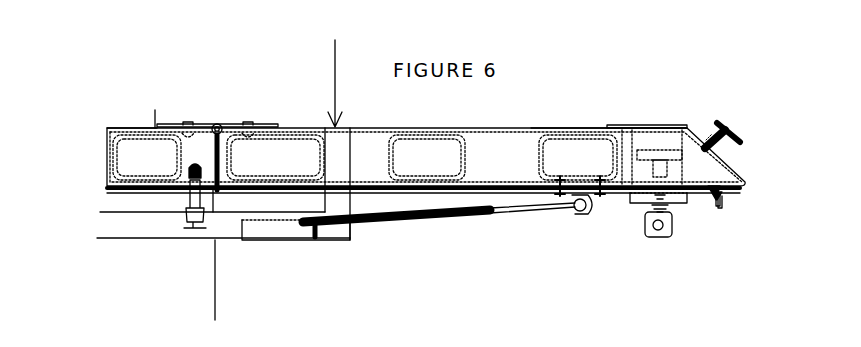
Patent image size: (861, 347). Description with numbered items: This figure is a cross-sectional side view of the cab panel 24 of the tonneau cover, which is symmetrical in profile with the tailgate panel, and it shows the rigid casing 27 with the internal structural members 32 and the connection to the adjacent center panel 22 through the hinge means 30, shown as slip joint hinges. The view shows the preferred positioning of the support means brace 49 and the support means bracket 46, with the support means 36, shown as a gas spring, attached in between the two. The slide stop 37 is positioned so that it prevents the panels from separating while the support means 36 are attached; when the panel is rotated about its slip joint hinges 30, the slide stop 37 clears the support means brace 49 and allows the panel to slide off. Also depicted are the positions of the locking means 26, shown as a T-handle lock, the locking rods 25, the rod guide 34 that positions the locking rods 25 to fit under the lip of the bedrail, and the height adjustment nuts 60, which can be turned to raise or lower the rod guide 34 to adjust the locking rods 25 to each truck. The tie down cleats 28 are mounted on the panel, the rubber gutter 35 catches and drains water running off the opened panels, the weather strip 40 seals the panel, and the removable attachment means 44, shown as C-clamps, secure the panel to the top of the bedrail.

The center panel 22 is at (150, 124).
The cab panel 24 is at (339, 78).
The locking rods 25 is at (663, 234).
The locking means 26 is at (637, 125).
The rigid casing 27 is at (107, 128).
The tie down cleats 28 is at (740, 140).
The hinge means 30 is at (217, 124).
The structural members 32 is at (107, 155).
The rod guide 34 is at (649, 240).
The gutter 35 is at (257, 190).
The support means 36 is at (400, 226).
The slide stop 37 is at (340, 245).
The weather strip 40 is at (720, 194).
The removable attachment means 44 is at (185, 229).
The support means bracket 46 is at (575, 215).
The support means brace 49 is at (748, 286).
The height adjustment nuts 60 is at (650, 209).